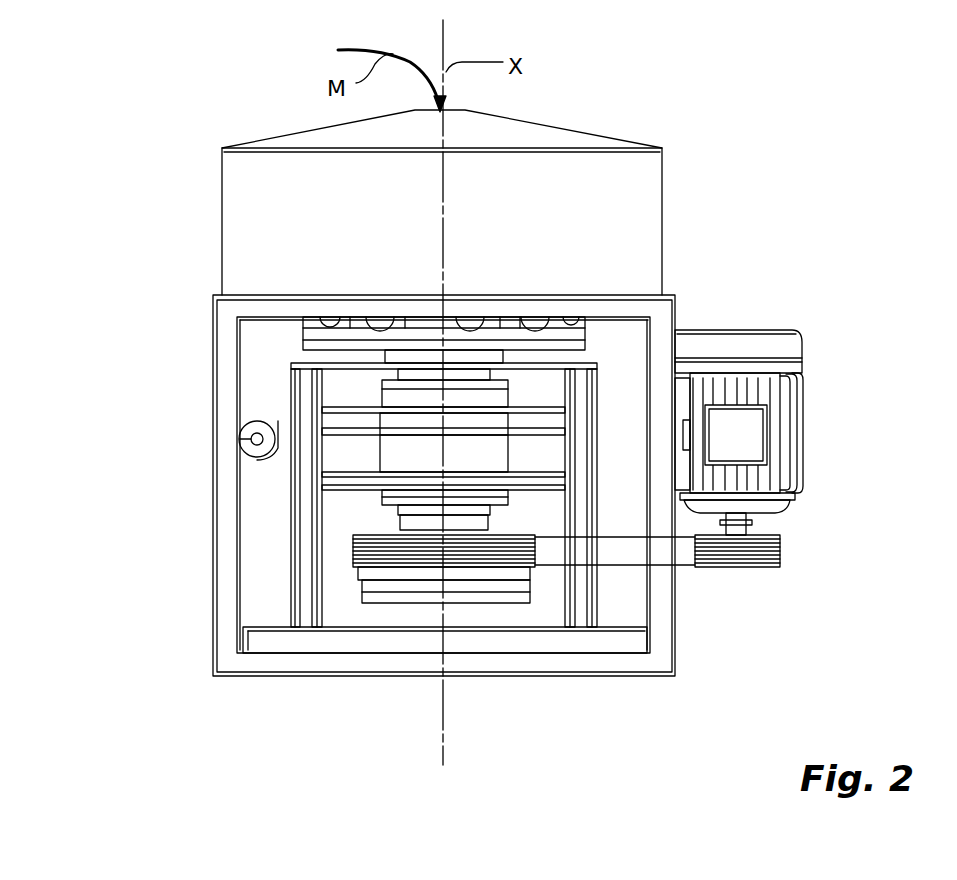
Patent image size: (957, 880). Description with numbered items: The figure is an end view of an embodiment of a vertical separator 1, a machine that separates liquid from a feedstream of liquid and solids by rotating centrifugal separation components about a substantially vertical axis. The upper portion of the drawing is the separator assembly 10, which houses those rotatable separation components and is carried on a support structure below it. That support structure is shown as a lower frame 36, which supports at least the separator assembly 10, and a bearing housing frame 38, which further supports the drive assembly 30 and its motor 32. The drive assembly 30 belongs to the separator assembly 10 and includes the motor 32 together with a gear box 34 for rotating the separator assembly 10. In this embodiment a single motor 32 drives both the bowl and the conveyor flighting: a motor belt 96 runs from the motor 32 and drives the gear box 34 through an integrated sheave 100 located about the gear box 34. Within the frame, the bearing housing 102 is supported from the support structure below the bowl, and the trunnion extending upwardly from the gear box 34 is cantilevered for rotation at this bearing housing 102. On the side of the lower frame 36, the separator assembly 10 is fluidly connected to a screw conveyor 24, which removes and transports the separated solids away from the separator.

The vertical separator 1 is at (752, 193).
The separator assembly 10 is at (222, 234).
The screw conveyor 24 is at (250, 439).
The drive assembly 30 is at (345, 364).
The motor 32 is at (802, 424).
The gear box 34 is at (493, 590).
The lower frame 36 is at (215, 638).
The bearing housing frame 38 is at (585, 612).
The motor belt 96 is at (683, 553).
The integrated sheave 100 is at (382, 553).
The bearing housing 102 is at (481, 446).